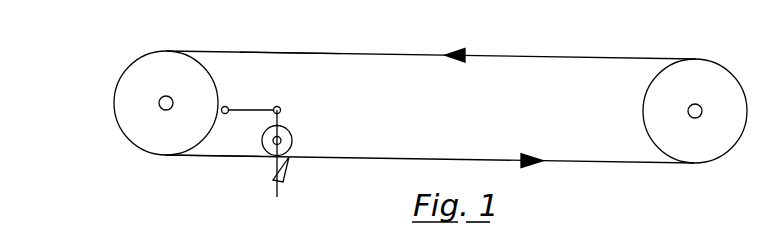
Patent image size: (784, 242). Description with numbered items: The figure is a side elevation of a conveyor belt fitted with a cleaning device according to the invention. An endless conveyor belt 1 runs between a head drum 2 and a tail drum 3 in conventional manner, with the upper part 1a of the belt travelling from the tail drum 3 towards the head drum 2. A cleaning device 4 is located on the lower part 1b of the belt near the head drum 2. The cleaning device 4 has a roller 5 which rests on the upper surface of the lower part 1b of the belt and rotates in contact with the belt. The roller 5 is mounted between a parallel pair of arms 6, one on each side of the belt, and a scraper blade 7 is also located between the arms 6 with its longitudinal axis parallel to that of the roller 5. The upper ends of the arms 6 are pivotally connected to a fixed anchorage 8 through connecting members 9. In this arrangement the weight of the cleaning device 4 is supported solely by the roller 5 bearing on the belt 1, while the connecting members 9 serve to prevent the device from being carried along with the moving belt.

The endless conveyor belt 1 is at (538, 56).
The upper part of the belt 1a is at (286, 52).
The lower part of the belt 1b is at (199, 156).
The head drum 2 is at (142, 142).
The tail drum 3 is at (685, 152).
The cleaning device 4 is at (299, 132).
The roller 5 is at (292, 138).
The arms 6 is at (278, 192).
The scraper blade 7 is at (285, 179).
The fixed anchorage 8 is at (225, 107).
The connecting members 9 is at (256, 107).